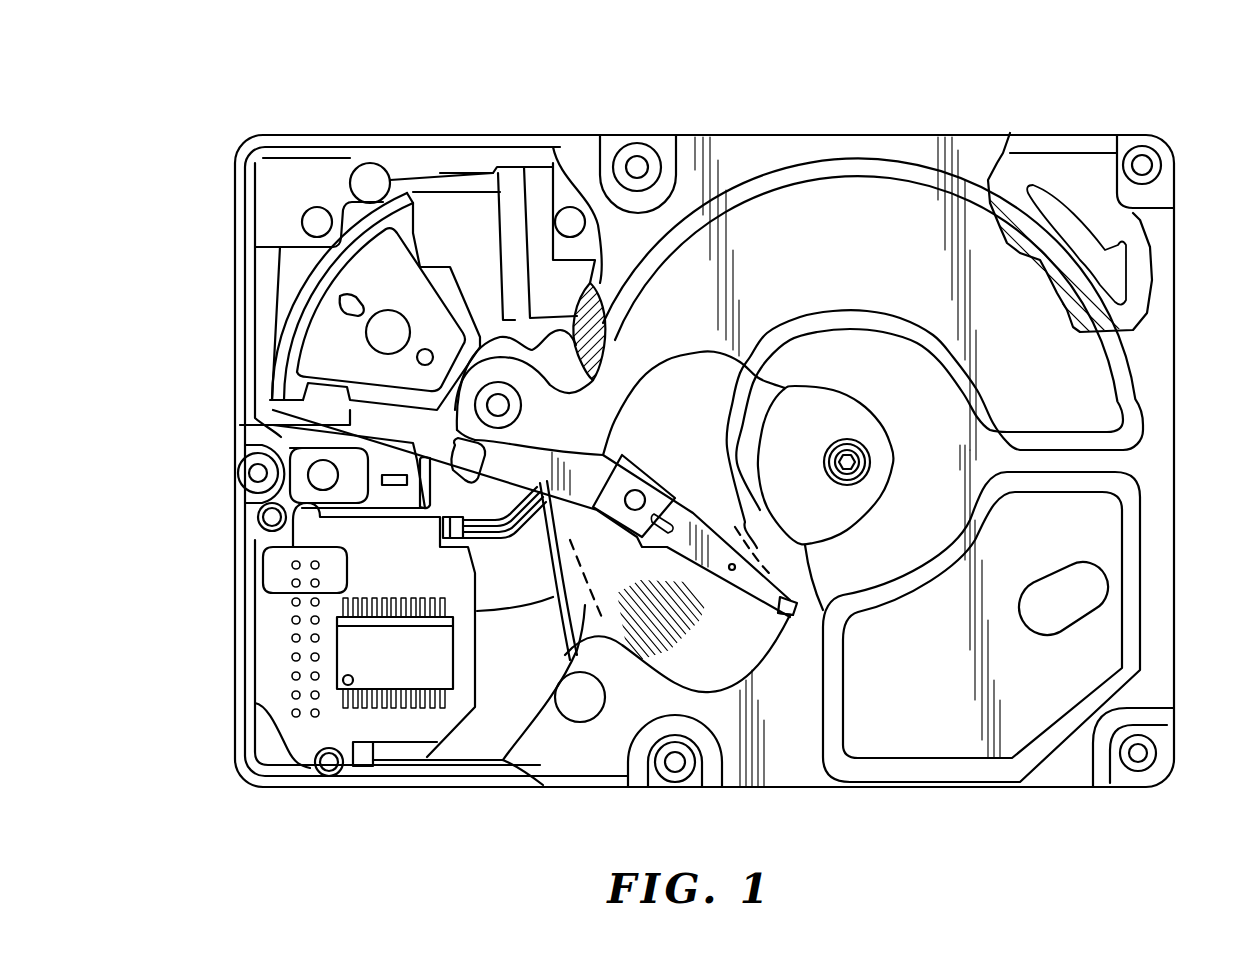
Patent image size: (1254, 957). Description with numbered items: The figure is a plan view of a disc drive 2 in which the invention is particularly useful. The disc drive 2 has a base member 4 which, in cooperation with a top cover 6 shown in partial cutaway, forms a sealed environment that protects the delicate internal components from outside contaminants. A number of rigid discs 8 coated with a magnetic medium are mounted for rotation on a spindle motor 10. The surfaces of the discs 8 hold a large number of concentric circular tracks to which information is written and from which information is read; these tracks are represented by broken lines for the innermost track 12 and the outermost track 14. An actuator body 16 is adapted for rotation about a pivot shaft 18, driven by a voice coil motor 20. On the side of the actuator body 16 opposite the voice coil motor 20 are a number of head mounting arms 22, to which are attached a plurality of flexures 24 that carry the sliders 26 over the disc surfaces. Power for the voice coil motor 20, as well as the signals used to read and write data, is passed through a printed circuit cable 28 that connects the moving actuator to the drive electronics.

The disc drive 2 is at (782, 118).
The base member 4 is at (326, 791).
The top cover 6 is at (1156, 442).
The rigid discs 8 is at (703, 643).
The spindle motor 10 is at (823, 517).
The innermost track 12 is at (760, 523).
The outermost track 14 is at (587, 577).
The actuator body 16 is at (520, 338).
The pivot shaft 18 is at (512, 405).
The voice coil motor 20 is at (303, 278).
The head mounting arms 22 is at (610, 458).
The flexures 24 is at (716, 527).
The sliders 26 is at (783, 620).
The printed circuit cable 28 is at (507, 745).